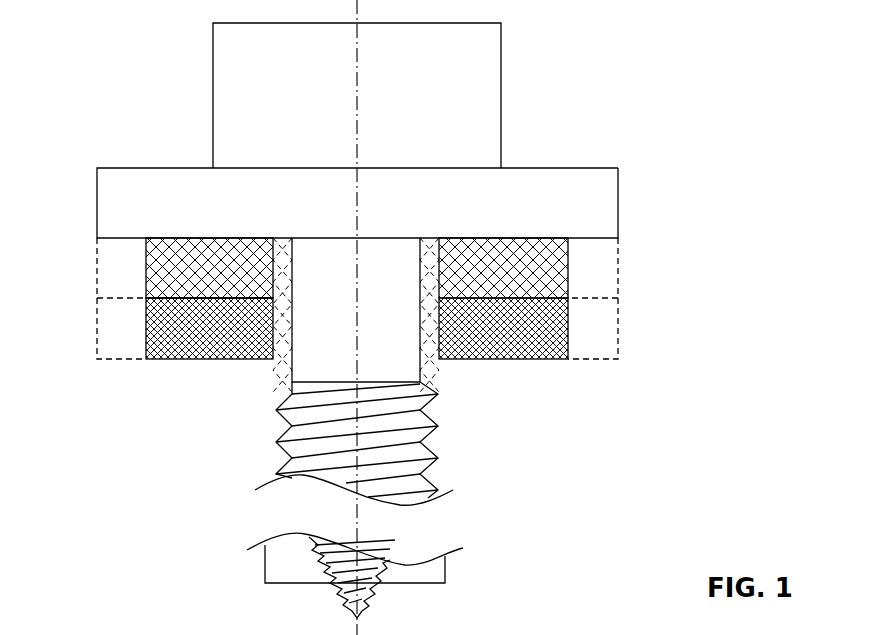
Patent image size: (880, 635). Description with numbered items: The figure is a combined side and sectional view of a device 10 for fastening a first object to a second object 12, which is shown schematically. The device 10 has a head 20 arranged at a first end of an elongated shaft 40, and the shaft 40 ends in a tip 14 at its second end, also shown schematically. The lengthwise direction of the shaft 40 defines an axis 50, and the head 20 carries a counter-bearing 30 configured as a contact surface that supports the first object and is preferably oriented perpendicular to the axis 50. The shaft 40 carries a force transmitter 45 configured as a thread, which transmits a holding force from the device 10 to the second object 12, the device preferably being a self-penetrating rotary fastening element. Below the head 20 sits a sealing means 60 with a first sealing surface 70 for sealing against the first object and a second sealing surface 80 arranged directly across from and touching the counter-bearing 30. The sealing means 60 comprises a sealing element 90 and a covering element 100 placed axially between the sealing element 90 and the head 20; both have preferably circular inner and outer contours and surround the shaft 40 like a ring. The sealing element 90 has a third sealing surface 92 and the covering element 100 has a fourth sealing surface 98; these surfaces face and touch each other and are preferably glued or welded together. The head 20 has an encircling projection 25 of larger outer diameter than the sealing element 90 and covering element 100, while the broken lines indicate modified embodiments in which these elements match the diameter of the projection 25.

The device 10 is at (117, 83).
The second object 12 is at (435, 577).
The tip 14 is at (347, 627).
The head 20 is at (493, 52).
The encircling projection 25 is at (512, 192).
The counter-bearing 30 is at (603, 240).
The shaft 40 is at (300, 352).
The force transmitter 45 is at (280, 447).
The axis 50 is at (357, 345).
The sealing means 60 is at (635, 323).
The first sealing surface 70 is at (525, 362).
The second sealing surface 80 is at (540, 240).
The sealing element 90 is at (157, 332).
The third sealing surface 92 is at (218, 297).
The fourth sealing surface 98 is at (203, 298).
The covering element 100 is at (148, 268).